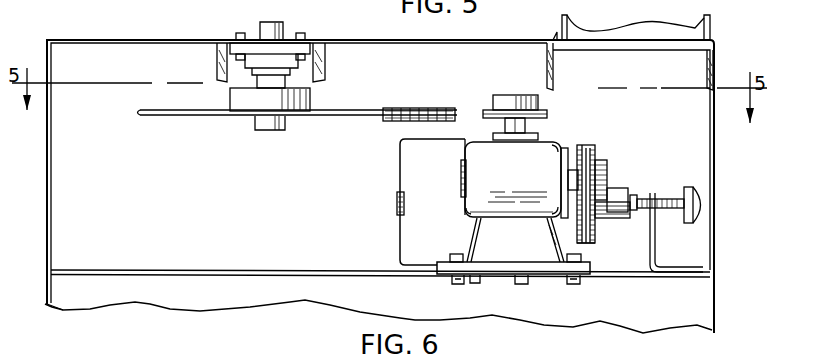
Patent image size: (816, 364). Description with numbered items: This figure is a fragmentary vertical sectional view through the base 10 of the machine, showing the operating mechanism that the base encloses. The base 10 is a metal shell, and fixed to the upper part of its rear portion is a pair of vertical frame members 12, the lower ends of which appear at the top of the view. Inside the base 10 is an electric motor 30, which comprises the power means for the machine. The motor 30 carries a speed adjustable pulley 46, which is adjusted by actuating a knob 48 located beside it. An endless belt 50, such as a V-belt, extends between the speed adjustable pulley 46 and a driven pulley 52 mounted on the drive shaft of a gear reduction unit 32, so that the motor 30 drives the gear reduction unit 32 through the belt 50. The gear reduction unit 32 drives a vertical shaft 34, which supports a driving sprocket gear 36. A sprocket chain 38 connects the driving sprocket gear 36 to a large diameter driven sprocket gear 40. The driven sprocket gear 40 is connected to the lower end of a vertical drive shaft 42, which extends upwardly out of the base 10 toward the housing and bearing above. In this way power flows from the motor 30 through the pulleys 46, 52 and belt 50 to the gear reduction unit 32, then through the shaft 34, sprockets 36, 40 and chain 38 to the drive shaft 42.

The base 10 is at (715, 168).
The vertical frame members 12 is at (708, 27).
The electric motor 30 is at (419, 164).
The gear reduction unit 32 is at (485, 196).
The vertical shaft 34 is at (527, 128).
The driving sprocket gear 36 is at (547, 112).
The sprocket chain 38 is at (401, 110).
The driven sprocket gear 40 is at (327, 116).
The vertical drive shaft 42 is at (283, 35).
The speed adjustable pulley 46 is at (593, 150).
The knob 48 is at (700, 203).
The endless belt 50 is at (590, 245).
The driven pulley 52 is at (606, 174).